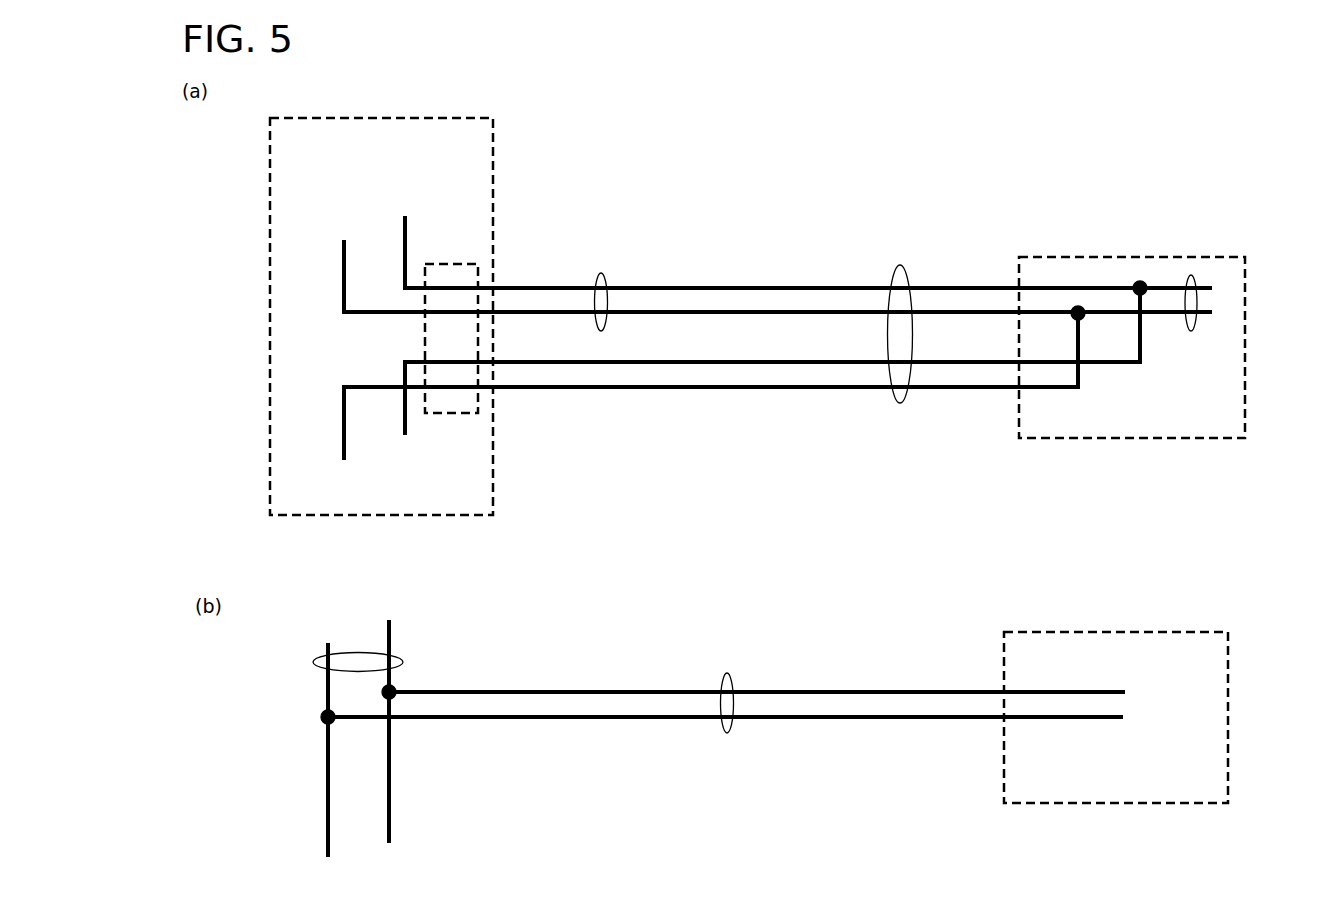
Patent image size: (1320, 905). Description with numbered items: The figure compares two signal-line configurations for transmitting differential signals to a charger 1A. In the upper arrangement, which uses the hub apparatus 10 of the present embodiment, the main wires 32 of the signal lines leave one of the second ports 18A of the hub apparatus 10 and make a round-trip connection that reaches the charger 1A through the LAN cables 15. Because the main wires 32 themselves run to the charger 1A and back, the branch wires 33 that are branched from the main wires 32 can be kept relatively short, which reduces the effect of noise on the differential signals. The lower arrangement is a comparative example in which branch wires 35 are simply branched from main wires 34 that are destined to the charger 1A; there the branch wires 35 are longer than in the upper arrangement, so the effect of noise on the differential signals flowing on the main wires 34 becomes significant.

The hub apparatus 10 is at (493, 137).
The second port 18A is at (453, 413).
The main wires 32 is at (601, 273).
The branch wires 33 is at (1191, 275).
The LAN cables 15 is at (900, 265).
The charger 1A is at (1245, 381).
The main wires 34 is at (443, 658).
The branch wires 35 is at (727, 673).